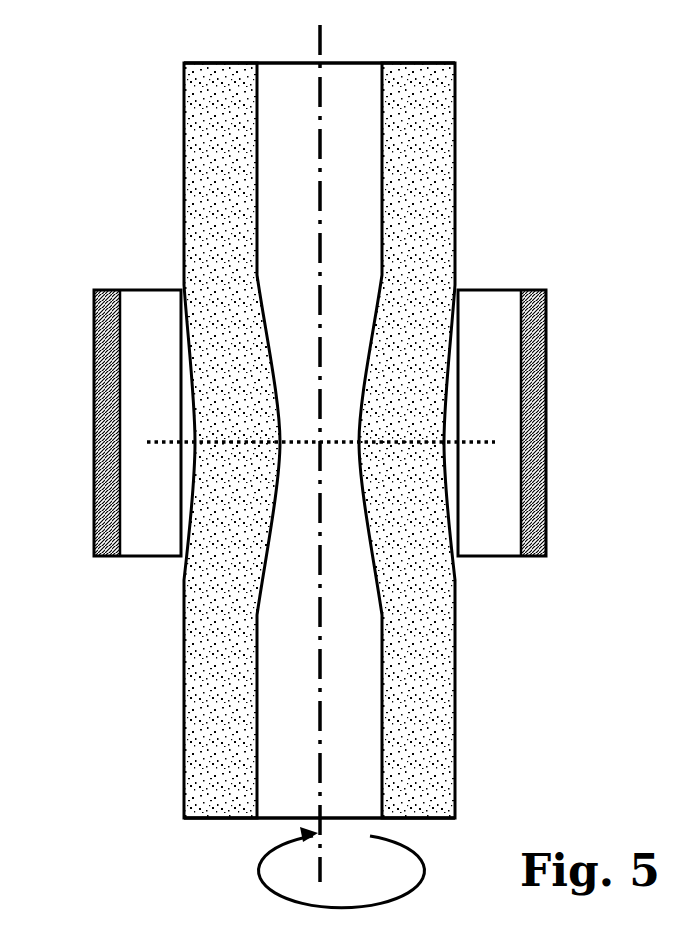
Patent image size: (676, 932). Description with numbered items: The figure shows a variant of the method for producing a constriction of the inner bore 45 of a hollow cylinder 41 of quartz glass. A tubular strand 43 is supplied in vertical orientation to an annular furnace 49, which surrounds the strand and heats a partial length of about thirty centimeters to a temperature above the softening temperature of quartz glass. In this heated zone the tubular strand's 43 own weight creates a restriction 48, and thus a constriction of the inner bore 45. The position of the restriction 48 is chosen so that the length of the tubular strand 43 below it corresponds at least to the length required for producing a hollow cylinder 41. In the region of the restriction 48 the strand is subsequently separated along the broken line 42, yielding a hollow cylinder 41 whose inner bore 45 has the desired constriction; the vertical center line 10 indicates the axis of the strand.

The longitudinal axis 10 is at (322, 130).
The hollow cylinder 41 is at (428, 220).
The broken line 42 is at (172, 443).
The tubular strand 43 is at (134, 618).
The inner bore 45 is at (313, 220).
The restriction 48 is at (452, 465).
The annular furnace 49 is at (537, 383).